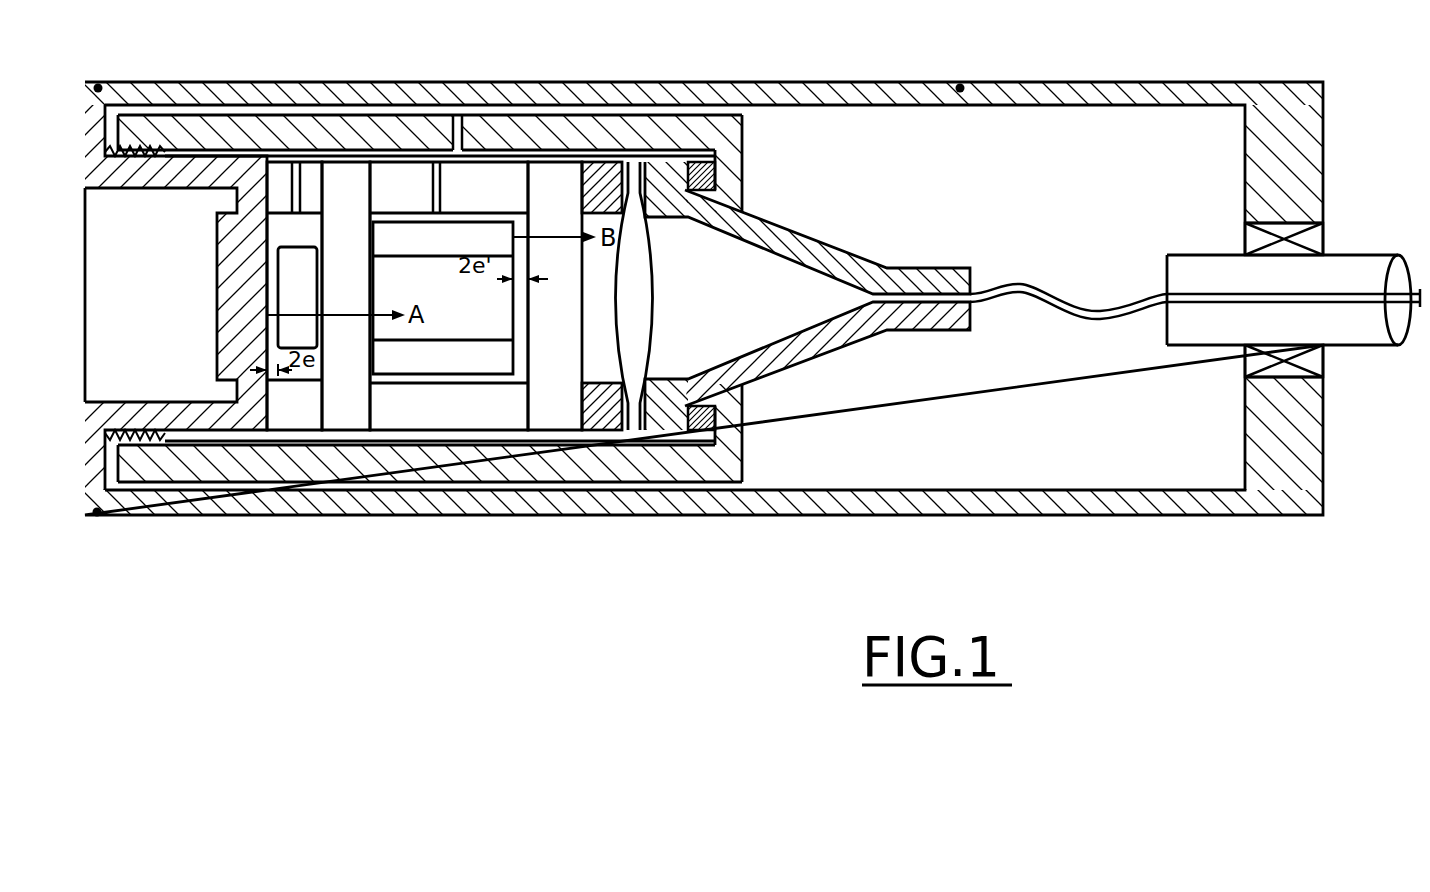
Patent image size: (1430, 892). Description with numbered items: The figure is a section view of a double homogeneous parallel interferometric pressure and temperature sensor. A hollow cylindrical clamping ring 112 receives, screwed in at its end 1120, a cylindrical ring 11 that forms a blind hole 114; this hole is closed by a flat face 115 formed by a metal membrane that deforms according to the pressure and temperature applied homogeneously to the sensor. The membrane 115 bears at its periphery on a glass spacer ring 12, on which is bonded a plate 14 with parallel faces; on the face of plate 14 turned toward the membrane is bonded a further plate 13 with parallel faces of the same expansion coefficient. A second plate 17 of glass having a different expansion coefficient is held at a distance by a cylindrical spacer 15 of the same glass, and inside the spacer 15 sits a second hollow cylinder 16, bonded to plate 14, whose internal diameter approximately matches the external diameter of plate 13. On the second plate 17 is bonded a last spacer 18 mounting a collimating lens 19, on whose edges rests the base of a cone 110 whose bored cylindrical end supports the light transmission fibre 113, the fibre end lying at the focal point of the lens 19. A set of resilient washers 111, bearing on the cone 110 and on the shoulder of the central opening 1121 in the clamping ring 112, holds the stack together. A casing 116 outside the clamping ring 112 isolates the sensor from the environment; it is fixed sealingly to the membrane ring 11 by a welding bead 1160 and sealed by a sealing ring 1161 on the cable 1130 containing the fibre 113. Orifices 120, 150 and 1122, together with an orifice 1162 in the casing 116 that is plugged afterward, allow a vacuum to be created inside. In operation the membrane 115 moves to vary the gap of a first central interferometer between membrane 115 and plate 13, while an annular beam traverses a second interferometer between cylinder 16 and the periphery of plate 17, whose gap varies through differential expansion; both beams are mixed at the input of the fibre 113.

The cylindrical ring 11 is at (203, 173).
The cone 110 is at (790, 240).
The resilient washers 111 is at (703, 405).
The clamping ring 112 is at (255, 455).
The light transmission fibre 113 is at (1015, 290).
The blind hole 114 is at (105, 350).
The flat face (membrane) 115 is at (205, 242).
The casing 116 is at (1240, 82).
The end of clamping ring 1120 is at (133, 445).
The central opening 1121 is at (730, 400).
The orifice 1122 is at (468, 150).
The cable 1130 is at (1352, 278).
The welding bead 1160 is at (98, 88).
The sealing ring 1161 is at (1316, 372).
The orifice 1162 is at (960, 88).
The spacer ring 12 is at (312, 177).
The orifice 120 is at (297, 173).
The plate with parallel faces 13 is at (345, 297).
The plate with parallel faces 14 is at (283, 280).
The cylindrical spacer 15 is at (407, 400).
The orifice 150 is at (442, 178).
The hollow cylinder 16 is at (480, 360).
The second plate with parallel faces 17 is at (558, 400).
The spacer 18 is at (600, 190).
The collimating lens 19 is at (638, 295).